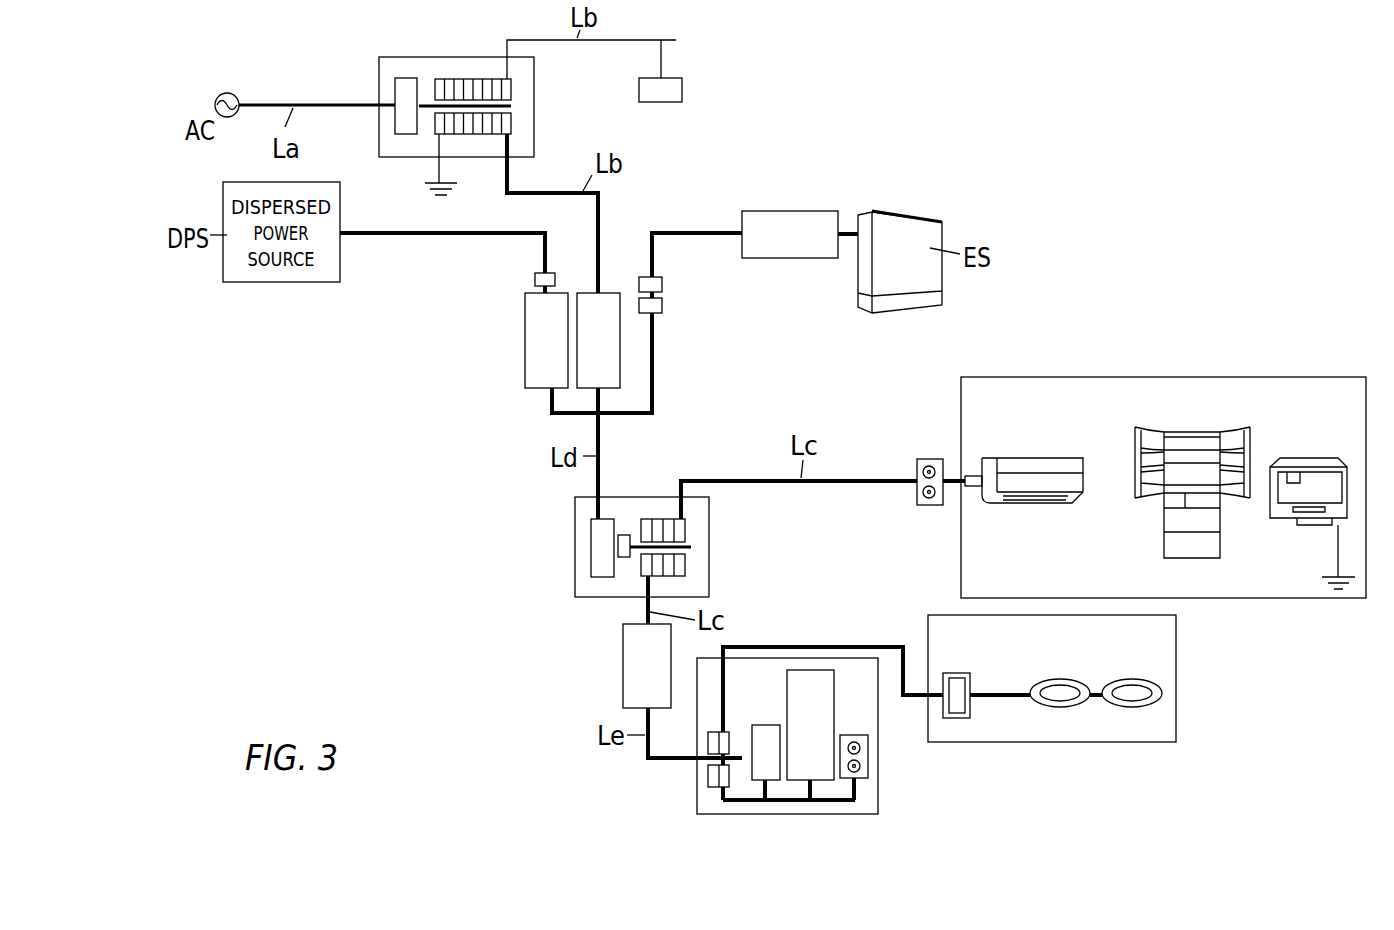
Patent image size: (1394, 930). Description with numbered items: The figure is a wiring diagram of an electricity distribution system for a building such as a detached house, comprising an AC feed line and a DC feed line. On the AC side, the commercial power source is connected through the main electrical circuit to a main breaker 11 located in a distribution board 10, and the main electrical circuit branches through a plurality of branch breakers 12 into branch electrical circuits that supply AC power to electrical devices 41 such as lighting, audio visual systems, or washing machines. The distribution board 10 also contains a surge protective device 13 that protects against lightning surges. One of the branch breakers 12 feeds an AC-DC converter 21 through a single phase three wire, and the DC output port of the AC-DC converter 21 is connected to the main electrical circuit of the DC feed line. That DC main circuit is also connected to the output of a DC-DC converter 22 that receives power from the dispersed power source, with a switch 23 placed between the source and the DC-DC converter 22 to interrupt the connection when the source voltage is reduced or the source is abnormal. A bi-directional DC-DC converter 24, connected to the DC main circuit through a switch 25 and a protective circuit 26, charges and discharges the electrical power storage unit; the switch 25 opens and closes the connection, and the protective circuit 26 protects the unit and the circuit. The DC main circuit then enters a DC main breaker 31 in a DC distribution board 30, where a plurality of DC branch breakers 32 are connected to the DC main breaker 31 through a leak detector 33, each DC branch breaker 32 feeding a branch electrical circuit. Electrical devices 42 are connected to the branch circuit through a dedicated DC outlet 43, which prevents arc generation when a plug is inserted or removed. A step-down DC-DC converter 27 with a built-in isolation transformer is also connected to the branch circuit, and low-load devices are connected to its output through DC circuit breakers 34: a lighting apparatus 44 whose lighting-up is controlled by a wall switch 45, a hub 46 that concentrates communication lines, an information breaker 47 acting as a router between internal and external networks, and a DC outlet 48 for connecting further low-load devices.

The distribution board 10 is at (530, 98).
The main breaker 11 is at (403, 77).
The branch breaker 12 is at (510, 82).
The surge protective device 13 is at (435, 127).
The AC-DC converter 21 is at (620, 375).
The DC-DC converter 22 is at (525, 346).
The switch 23 is at (534, 279).
The bi-directional DC-DC converter 24 is at (787, 211).
The switch 25 is at (662, 286).
The protective circuit 26 is at (662, 306).
The DC-DC converter for step down 27 is at (623, 681).
The DC distribution board 30 is at (700, 550).
The DC main breaker 31 is at (591, 541).
The DC branch breaker 32 is at (685, 528).
The leak detector 33 is at (625, 535).
The DC circuit breaker 34 is at (708, 742).
The electrical device (AC device) 41 is at (682, 90).
The electrical device 42 is at (1036, 458).
The DC outlet 43 is at (930, 459).
The lighting apparatus 44 is at (1116, 680).
The wall switch 45 is at (958, 673).
The hub 46 is at (762, 725).
The information breaker 47 is at (822, 670).
The DC outlet 48 is at (853, 735).